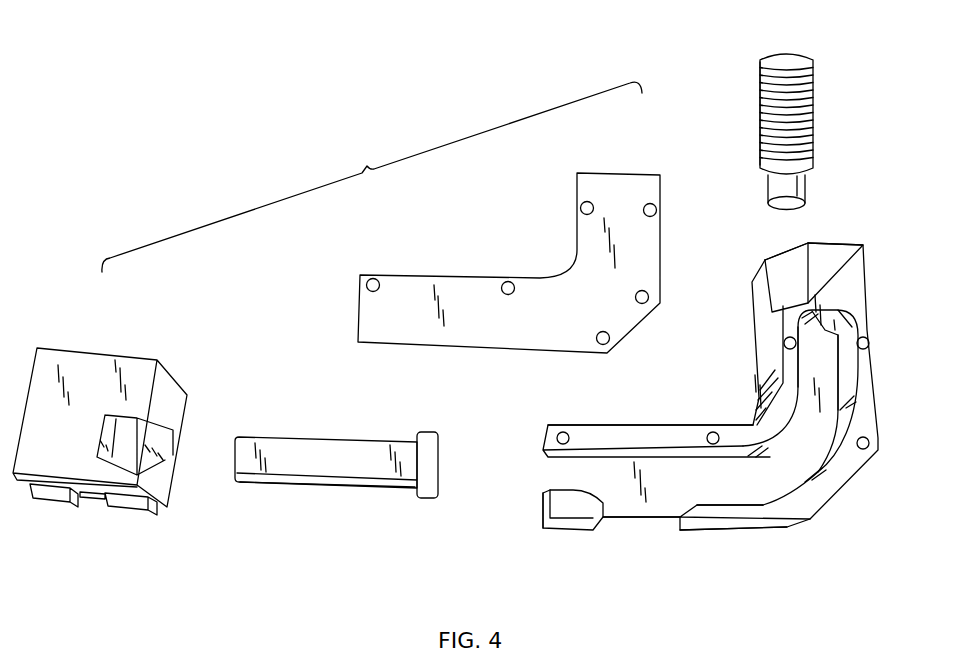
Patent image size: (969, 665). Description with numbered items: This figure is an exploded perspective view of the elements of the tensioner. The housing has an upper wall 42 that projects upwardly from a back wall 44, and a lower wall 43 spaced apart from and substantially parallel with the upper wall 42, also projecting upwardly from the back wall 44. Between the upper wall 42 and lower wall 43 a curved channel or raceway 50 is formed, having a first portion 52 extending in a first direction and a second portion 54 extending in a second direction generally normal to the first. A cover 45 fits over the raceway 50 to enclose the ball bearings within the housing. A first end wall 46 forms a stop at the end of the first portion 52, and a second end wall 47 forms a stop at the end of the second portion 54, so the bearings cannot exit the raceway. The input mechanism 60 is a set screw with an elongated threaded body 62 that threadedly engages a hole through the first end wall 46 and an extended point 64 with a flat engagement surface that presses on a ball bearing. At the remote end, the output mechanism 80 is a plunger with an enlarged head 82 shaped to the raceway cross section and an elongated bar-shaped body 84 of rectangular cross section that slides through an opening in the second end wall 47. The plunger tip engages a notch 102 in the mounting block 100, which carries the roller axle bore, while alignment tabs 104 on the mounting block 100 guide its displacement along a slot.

The upper wall 42 is at (668, 433).
The lower wall 43 is at (760, 513).
The back wall 44 is at (608, 488).
The cover 45 is at (582, 319).
The first end wall 46 is at (858, 272).
The second end wall 47 is at (537, 515).
The raceway 50 is at (751, 492).
The first portion of raceway 52 is at (828, 382).
The second portion of raceway 54 is at (685, 490).
The input mechanism 60 is at (807, 52).
The threaded body 62 is at (760, 100).
The extended point 64 is at (807, 190).
The output mechanism 80 is at (336, 497).
The head 82 is at (428, 500).
The body 84 is at (293, 482).
The mounting block 100 is at (127, 462).
The notch 102 is at (152, 430).
The alignment tabs 104 is at (62, 503).